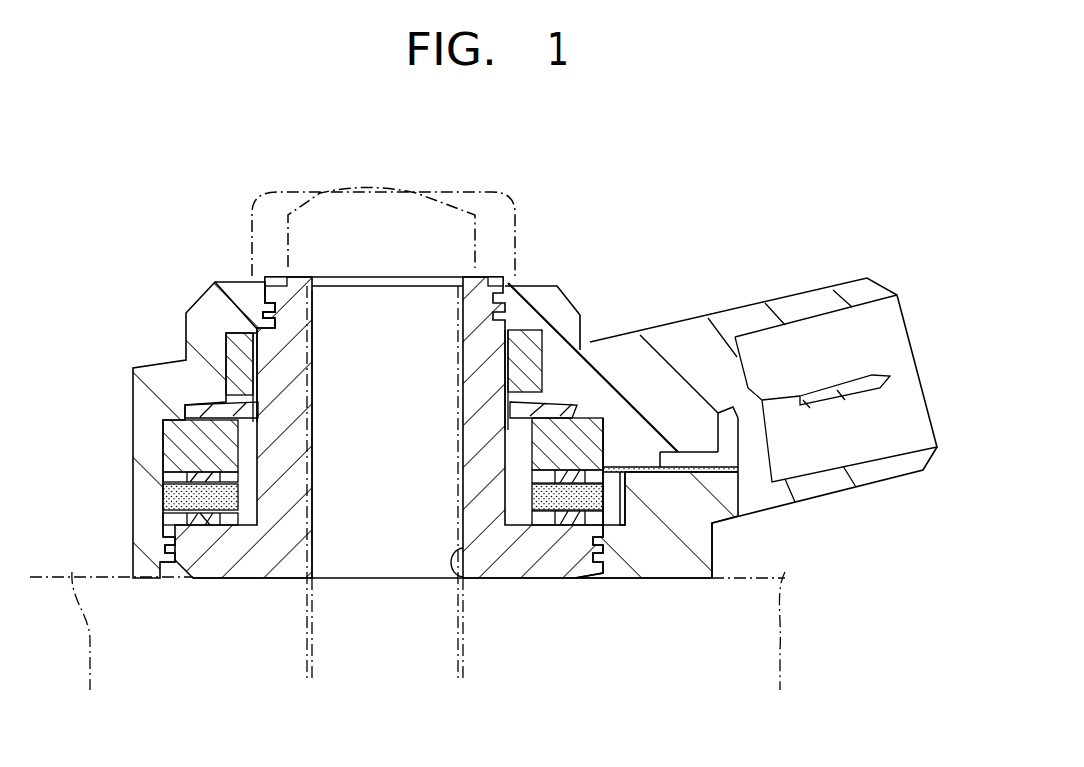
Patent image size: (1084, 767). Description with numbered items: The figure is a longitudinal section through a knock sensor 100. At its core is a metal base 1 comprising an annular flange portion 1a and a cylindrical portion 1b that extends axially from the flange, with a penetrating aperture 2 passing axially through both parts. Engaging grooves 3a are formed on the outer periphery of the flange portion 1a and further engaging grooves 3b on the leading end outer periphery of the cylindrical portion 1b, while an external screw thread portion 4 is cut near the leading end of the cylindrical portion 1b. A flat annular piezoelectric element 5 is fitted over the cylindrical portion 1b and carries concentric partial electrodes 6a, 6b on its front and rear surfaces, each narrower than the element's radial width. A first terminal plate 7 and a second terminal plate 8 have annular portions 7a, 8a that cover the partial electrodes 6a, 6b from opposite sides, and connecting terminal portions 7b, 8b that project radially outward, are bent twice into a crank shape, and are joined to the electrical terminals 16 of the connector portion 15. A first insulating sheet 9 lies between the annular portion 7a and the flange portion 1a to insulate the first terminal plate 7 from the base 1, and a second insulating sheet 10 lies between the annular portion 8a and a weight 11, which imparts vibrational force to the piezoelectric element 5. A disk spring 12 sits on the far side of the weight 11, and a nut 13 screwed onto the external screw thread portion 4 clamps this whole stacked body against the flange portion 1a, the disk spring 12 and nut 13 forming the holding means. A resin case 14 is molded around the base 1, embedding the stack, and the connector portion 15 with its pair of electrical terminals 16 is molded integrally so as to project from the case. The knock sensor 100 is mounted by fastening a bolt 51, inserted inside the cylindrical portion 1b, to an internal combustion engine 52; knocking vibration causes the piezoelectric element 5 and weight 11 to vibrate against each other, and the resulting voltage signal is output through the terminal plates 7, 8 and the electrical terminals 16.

The knock sensor 100 is at (180, 278).
The base 1 is at (370, 480).
The flange portion 1a is at (282, 556).
The cylindrical portion 1b is at (292, 470).
The penetrating aperture 2 is at (473, 580).
The engaging groove 3a is at (160, 565).
The engaging groove 3b is at (265, 297).
The external screw thread portion 4 is at (500, 355).
The piezoelectric element 5 is at (170, 500).
The partial electrode 6a is at (165, 518).
The partial electrode 6b is at (165, 478).
The first terminal plate 7 is at (537, 517).
The annular portion 7a is at (207, 525).
The connecting terminal portion 7b is at (640, 520).
The second terminal plate 8 is at (537, 476).
The annular portion 8a is at (217, 473).
The connecting terminal portion 8b is at (618, 520).
The first insulating sheet 9 is at (160, 540).
The second insulating sheet 10 is at (165, 458).
The weight 11 is at (533, 447).
The disk spring 12 is at (590, 342).
The nut 13 is at (550, 397).
The resin case 14 is at (165, 370).
The connector portion 15 is at (693, 338).
The electrical terminal 16 is at (797, 403).
The bolt 51 is at (495, 192).
The internal combustion engine 52 is at (790, 630).